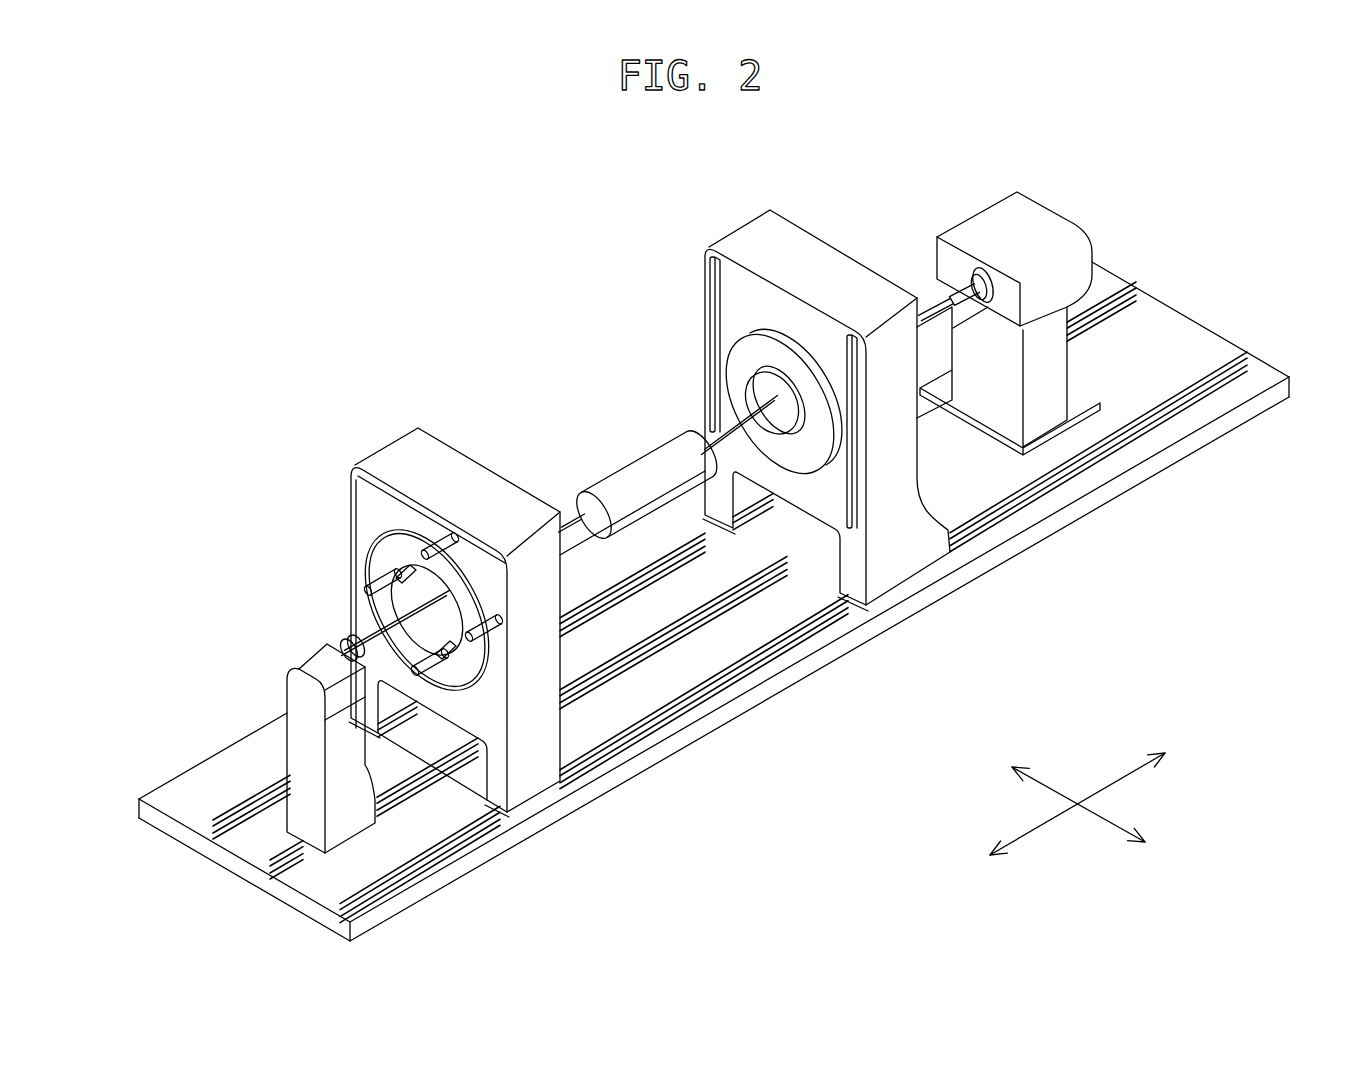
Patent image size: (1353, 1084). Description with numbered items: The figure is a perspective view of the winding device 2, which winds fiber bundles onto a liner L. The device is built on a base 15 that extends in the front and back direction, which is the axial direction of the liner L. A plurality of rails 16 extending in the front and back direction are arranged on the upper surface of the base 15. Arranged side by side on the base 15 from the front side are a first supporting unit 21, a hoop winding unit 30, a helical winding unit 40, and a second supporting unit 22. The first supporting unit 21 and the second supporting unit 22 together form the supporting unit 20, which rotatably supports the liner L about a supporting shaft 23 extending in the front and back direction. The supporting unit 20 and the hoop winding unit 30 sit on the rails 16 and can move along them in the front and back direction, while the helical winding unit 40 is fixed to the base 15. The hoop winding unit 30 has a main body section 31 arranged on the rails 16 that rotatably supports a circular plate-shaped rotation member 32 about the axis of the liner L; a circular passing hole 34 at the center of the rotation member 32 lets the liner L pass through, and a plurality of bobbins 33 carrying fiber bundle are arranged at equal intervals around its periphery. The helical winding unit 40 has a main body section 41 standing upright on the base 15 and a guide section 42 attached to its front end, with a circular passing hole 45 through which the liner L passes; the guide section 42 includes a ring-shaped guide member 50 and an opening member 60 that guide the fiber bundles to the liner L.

The winding device 2 is at (317, 233).
The base 15 is at (176, 747).
The rails 16 is at (776, 669).
The supporting unit 20 is at (634, 493).
The first supporting unit 21 is at (292, 678).
The second supporting unit 22 is at (1032, 218).
The supporting shaft 23 is at (930, 313).
The hoop winding unit 30 is at (360, 423).
The main body section 31 is at (470, 470).
The rotation member 32 is at (380, 553).
The bobbins 33 is at (442, 538).
The passing hole 34 is at (415, 600).
The helical winding unit 40 is at (720, 208).
The main body section 41 is at (828, 267).
The guide section 42 is at (797, 325).
The passing hole 45 is at (745, 398).
The guide member 50 is at (835, 423).
The opening member 60 is at (730, 356).
The liner L is at (652, 468).